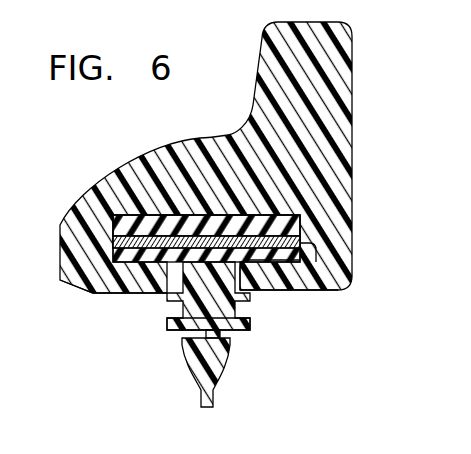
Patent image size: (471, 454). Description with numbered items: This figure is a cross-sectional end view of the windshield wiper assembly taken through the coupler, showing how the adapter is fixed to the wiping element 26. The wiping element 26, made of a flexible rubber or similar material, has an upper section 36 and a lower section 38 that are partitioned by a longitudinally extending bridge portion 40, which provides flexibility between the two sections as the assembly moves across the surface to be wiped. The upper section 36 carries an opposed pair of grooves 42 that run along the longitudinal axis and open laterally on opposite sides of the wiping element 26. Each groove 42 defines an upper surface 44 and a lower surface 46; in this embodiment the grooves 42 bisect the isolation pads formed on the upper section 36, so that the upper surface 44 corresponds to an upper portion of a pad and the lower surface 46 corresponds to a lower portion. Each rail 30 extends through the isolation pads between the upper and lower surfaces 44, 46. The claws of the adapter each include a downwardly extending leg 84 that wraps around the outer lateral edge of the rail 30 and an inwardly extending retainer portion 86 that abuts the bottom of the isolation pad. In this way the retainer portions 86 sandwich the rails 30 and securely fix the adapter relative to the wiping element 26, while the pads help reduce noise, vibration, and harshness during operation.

The rail 30 is at (133, 213).
The groove 42 is at (77, 218).
The upper surface 44 is at (171, 217).
The downwardly extending leg 84 is at (338, 247).
The inwardly extending retainer portion 86 is at (263, 290).
The lower surface 46 is at (82, 279).
The upper section 36 is at (178, 306).
The bridge portion 40 is at (188, 333).
The lower section 38 is at (218, 372).
The wiping element 26 is at (173, 382).